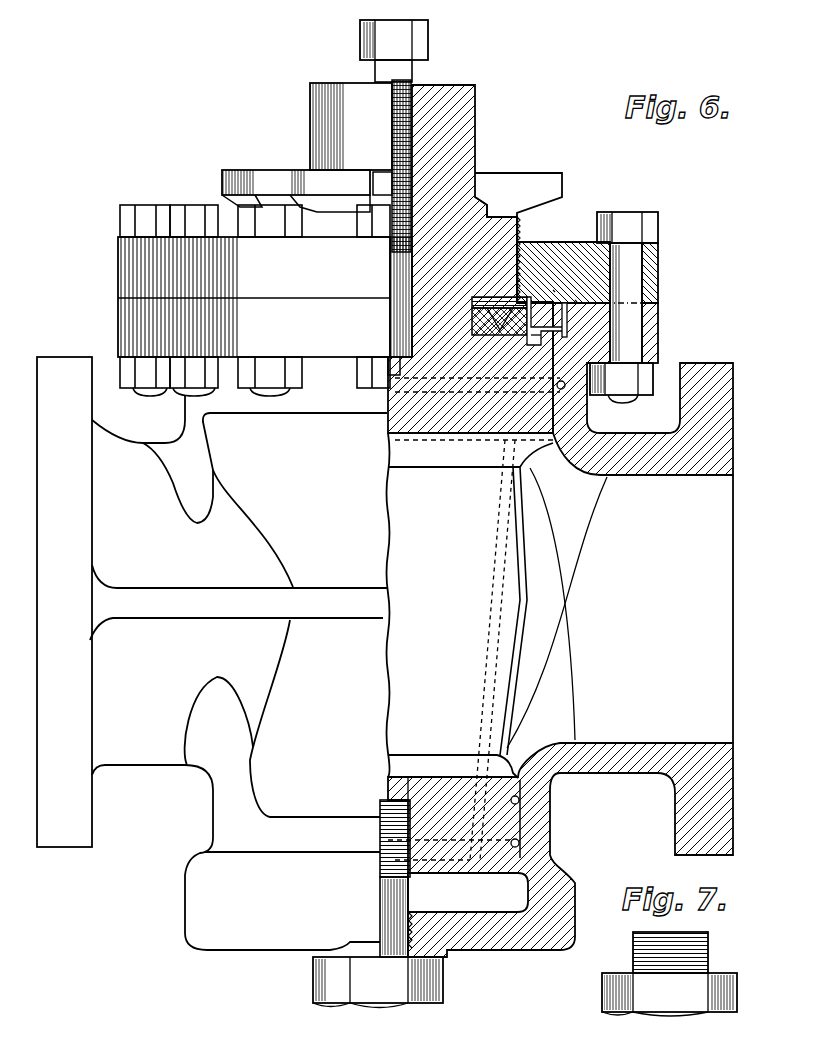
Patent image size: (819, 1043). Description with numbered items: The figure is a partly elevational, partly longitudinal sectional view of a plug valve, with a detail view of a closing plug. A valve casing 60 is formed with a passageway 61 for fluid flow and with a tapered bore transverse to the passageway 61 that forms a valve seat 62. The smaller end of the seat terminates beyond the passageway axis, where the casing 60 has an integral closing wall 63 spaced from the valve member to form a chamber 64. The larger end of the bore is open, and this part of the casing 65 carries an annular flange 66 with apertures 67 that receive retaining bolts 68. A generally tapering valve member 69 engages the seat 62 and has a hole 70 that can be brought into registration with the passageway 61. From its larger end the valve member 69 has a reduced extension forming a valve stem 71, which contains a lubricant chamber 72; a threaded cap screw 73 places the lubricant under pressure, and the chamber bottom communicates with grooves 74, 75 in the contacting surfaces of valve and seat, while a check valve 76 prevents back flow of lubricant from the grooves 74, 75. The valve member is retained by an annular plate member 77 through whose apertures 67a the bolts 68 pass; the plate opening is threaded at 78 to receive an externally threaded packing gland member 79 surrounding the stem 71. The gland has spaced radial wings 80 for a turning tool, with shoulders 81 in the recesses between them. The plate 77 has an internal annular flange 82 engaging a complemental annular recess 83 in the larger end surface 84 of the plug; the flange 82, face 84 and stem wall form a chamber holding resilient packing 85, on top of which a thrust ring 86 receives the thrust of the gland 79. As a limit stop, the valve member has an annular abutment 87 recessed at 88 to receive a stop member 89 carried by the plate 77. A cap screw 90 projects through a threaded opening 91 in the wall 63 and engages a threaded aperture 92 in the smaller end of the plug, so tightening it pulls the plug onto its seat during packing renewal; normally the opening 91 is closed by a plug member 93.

In FIG. 6, the valve casing 60 is at (640, 458).
In FIG. 6, the passageway 61 is at (722, 560).
In FIG. 6, the valve seat 62 is at (520, 812).
In FIG. 6, the closing wall 63 is at (488, 940).
In FIG. 6, the chamber 64 is at (510, 900).
In FIG. 6, the open casing part 65 is at (584, 404).
In FIG. 6, the annular flange 66 is at (658, 314).
In FIG. 6, the apertures 67 is at (658, 343).
In FIG. 6, the apertures in plate member 67a is at (612, 270).
In FIG. 6, the retaining bolts 68 is at (622, 285).
In FIG. 6, the valve member 69 is at (443, 432).
In FIG. 6, the hole 70 is at (470, 630).
In FIG. 6, the valve stem 71 is at (455, 135).
In FIG. 6, the lubricant chamber 72 is at (395, 273).
In FIG. 6, the threaded cap screw 73 is at (414, 113).
In FIG. 6, the lubricant groove 74 is at (498, 540).
In FIG. 6, the lubricant groove 75 is at (468, 892).
In FIG. 6, the check valve 76 is at (392, 360).
In FIG. 6, the annular plate member 77 is at (560, 243).
In FIG. 6, the threaded opening 78 is at (535, 257).
In FIG. 6, the packing gland member 79 is at (512, 212).
In FIG. 6, the radial wings 80 is at (300, 170).
In FIG. 6, the shoulders 81 is at (488, 200).
In FIG. 6, the internal annular flange 82 is at (530, 336).
In FIG. 6, the annular recess 83 is at (538, 340).
In FIG. 6, the larger end surface 84 is at (493, 335).
In FIG. 6, the packing 85 is at (472, 300).
In FIG. 6, the thrust ring 86 is at (435, 303).
In FIG. 6, the annular abutment 87 is at (567, 320).
In FIG. 6, the recess 88 is at (566, 276).
In FIG. 6, the stop member 89 is at (589, 290).
In FIG. 6, the cap screw 90 is at (394, 958).
In FIG. 6, the threaded opening 91 is at (407, 945).
In FIG. 6, the threaded aperture 92 is at (412, 851).
In FIG. 7, the plug member 93 is at (708, 945).